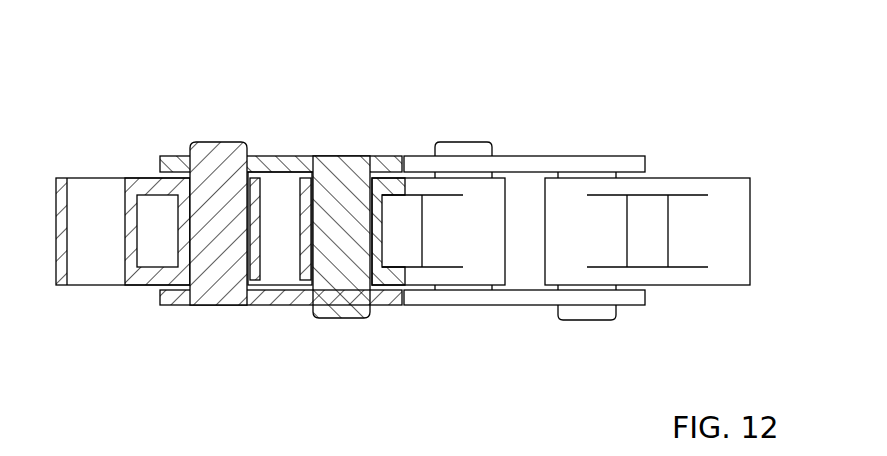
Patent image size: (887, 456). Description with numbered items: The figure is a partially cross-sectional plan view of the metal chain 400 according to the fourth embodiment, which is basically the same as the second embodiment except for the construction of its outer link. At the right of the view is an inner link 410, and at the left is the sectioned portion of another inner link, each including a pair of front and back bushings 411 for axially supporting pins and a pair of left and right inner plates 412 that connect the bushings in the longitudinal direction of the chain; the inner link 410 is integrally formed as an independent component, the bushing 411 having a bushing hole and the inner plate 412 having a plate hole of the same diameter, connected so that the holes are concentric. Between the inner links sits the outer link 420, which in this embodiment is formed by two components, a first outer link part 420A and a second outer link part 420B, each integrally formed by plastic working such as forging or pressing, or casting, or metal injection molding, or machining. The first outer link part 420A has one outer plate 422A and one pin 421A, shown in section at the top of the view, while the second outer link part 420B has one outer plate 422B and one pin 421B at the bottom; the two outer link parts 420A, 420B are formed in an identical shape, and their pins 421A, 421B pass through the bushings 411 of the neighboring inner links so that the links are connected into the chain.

The metal chain 400 is at (91, 73).
The inner link 410 is at (683, 171).
The bushing 411 is at (63, 237).
The inner plate 412 is at (147, 188).
The outer link 420 is at (527, 144).
The first outer link part 420A is at (368, 84).
The pin 421A is at (337, 178).
The outer plate 422A is at (290, 160).
The second outer link part 420B is at (310, 392).
The pin 421B is at (222, 262).
The outer plate 422B is at (270, 305).